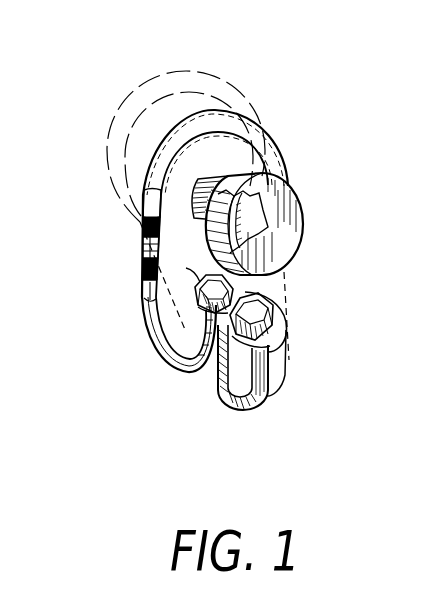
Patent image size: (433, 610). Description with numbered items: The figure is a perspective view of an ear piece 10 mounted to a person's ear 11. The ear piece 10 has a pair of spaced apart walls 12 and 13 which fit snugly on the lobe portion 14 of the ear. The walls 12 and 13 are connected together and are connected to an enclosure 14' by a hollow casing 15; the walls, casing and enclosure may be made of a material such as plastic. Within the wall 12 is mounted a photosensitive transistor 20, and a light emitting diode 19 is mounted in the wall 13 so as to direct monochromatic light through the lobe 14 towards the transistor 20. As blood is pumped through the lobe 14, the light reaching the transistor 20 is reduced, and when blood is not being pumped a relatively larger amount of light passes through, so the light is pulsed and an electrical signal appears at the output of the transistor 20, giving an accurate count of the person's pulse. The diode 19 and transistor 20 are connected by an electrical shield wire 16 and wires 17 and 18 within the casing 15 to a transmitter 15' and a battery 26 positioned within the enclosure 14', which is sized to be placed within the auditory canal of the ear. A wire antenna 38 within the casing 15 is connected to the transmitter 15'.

The ear piece 10 is at (232, 127).
The ear 11 is at (186, 68).
The wire antenna 38 is at (141, 205).
The wire 18 is at (143, 237).
The wire 17 is at (143, 252).
The electrical shield wire 16 is at (143, 277).
The hollow casing 15 is at (126, 300).
The battery 26 is at (214, 380).
The photosensitive transistor 20 is at (208, 282).
The enclosure 14' is at (273, 220).
The transmitter 15' is at (279, 221).
The wall 12 is at (252, 296).
The wall 13 is at (265, 316).
The light emitting diode 19 is at (256, 312).
The lobe portion 14 is at (266, 367).